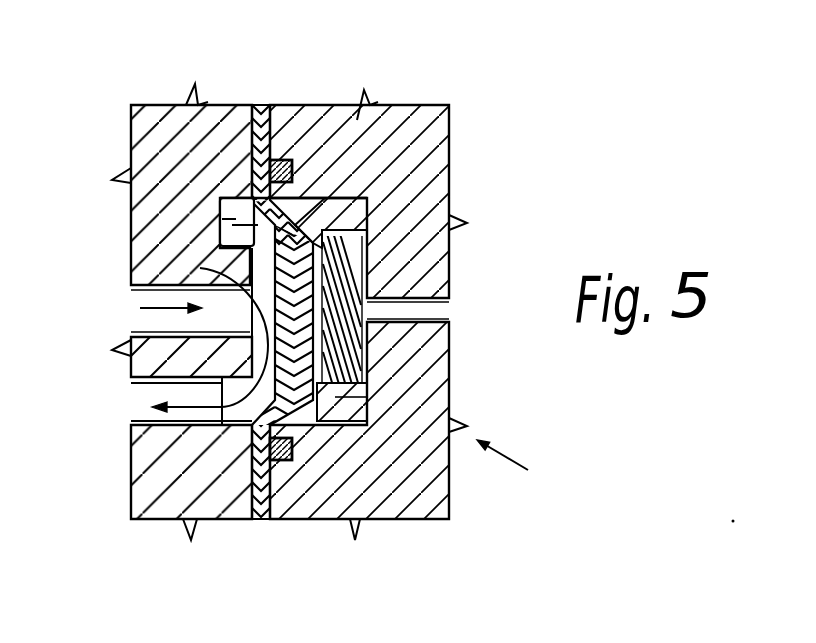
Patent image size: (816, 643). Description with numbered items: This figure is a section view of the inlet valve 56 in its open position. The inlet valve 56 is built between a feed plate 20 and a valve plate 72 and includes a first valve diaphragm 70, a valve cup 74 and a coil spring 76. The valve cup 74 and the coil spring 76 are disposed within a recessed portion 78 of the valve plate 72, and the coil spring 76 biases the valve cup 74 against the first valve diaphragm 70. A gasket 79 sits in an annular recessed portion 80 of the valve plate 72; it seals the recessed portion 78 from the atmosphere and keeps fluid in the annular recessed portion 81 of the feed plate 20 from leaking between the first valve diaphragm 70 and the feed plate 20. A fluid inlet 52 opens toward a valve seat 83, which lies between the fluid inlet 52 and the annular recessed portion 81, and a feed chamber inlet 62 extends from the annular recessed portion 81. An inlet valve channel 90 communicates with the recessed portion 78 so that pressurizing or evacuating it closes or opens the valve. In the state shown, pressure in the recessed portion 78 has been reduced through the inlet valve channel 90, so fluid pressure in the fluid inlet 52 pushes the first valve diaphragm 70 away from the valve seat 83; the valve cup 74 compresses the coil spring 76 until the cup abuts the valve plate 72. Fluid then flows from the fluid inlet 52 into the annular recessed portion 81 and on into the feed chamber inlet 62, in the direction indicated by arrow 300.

The feed plate 20 is at (150, 477).
The fluid inlet 52 is at (140, 314).
The inlet valve 56 is at (525, 470).
The feed chamber inlet 62 is at (138, 394).
The first valve diaphragm 70 is at (262, 104).
The valve plate 72 is at (428, 388).
The valve cup 74 is at (350, 424).
The coil spring 76 is at (357, 268).
The recessed portion 78 is at (367, 230).
The gasket 79 is at (283, 160).
The annular recessed portion 80 is at (283, 461).
The annular recessed portion 81 is at (218, 215).
The valve seat 83 is at (232, 223).
The inlet valve channel 90 is at (420, 313).
The arrow 300 is at (200, 268).